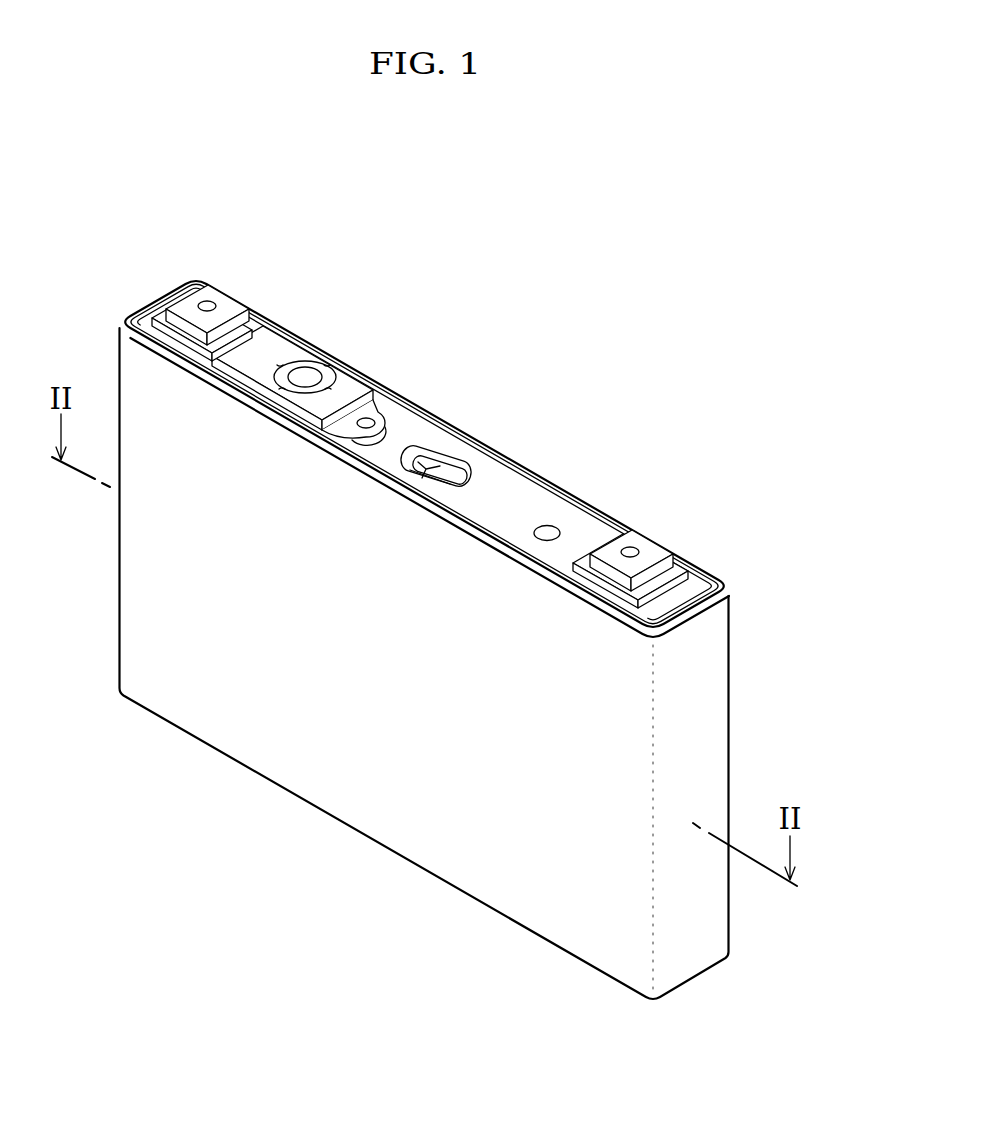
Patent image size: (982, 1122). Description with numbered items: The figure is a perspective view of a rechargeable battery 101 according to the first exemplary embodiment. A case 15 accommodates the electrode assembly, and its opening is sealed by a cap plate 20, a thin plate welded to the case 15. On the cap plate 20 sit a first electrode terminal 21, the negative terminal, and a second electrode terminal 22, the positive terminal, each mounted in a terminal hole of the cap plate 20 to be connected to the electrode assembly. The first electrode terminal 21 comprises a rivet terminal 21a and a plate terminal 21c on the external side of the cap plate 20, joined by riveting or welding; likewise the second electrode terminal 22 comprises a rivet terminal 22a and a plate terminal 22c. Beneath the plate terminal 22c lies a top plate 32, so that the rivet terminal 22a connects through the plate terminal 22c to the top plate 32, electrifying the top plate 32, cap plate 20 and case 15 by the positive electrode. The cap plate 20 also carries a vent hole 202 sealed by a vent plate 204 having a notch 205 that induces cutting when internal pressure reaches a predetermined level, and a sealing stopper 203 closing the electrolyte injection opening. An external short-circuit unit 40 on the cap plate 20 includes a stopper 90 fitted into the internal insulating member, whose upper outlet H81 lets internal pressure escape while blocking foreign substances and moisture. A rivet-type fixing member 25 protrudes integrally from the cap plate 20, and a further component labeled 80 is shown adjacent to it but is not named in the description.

The rechargeable battery 101 is at (476, 204).
The case 15 is at (350, 785).
The cap plate 20 is at (397, 430).
The first electrode terminal 21 is at (213, 282).
The rivet terminal 21a is at (204, 302).
The plate terminal 21c is at (233, 308).
The second electrode terminal 22 is at (634, 522).
The rivet terminal 22a is at (634, 549).
The plate terminal 22c is at (655, 572).
The fixing member 25 is at (368, 420).
The top plate 32 is at (652, 598).
The external short-circuit unit 40 is at (292, 324).
The short circuit member plate 80 is at (350, 388).
The stopper 90 is at (306, 375).
The upper outlet H81 is at (350, 388).
The vent hole 202 is at (422, 450).
The sealing stopper 203 is at (548, 528).
The vent plate 204 is at (441, 466).
The notch 205 is at (450, 482).